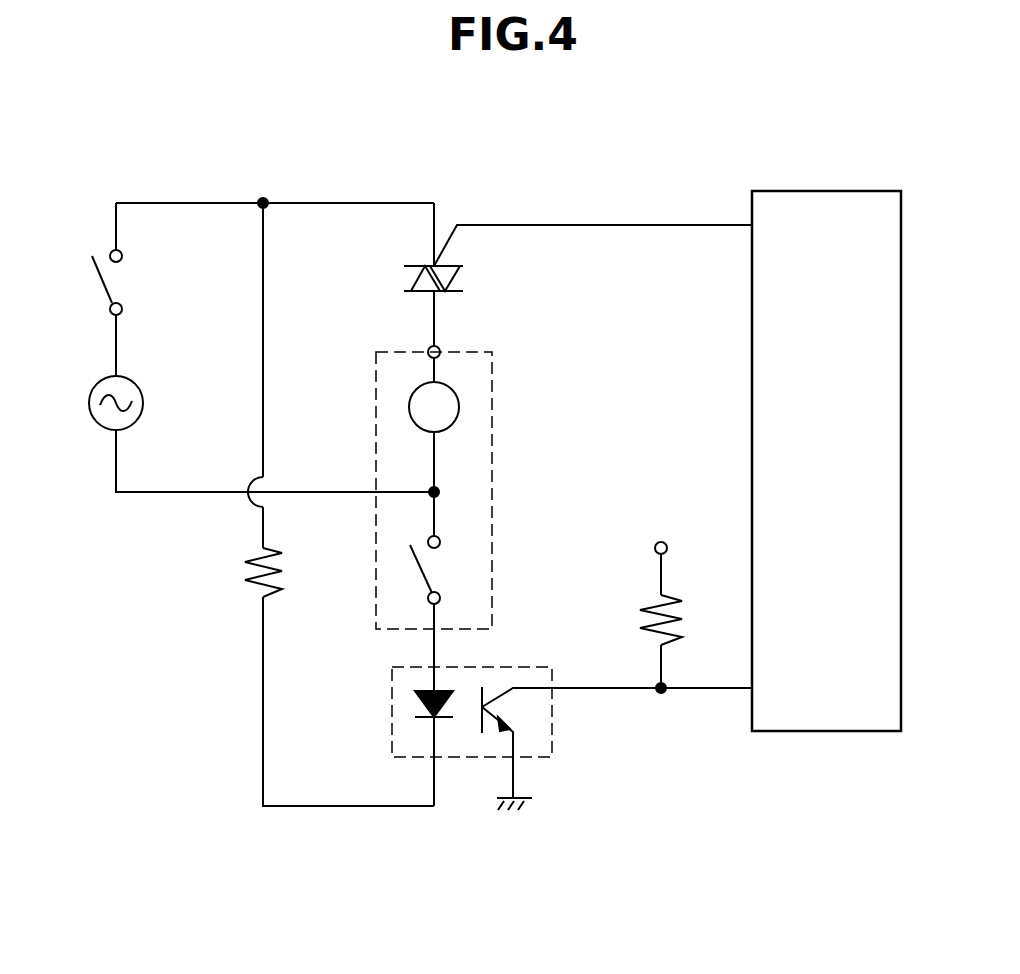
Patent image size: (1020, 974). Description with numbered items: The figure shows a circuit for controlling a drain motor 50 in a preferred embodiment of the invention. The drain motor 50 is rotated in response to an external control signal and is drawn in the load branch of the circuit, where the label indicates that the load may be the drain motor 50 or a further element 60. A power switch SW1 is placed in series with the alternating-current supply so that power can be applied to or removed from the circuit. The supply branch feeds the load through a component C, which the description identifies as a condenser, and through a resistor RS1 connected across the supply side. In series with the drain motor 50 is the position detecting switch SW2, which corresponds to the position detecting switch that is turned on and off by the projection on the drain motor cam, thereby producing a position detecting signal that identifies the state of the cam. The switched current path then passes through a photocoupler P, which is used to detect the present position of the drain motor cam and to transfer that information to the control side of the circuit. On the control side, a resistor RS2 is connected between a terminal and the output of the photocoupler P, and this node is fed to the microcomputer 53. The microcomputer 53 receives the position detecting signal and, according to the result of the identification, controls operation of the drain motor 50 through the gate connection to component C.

The microcomputer 53 is at (833, 732).
The drain motor 50 is at (510, 393).
The lamp / heater load 60 is at (452, 382).
The photocoupler P is at (552, 725).
The condenser C is at (564, 274).
The power switch SW1 is at (81, 289).
The position detecting switch SW2 is at (454, 591).
The resistor RS1 is at (315, 504).
The resistor RS2 is at (690, 615).